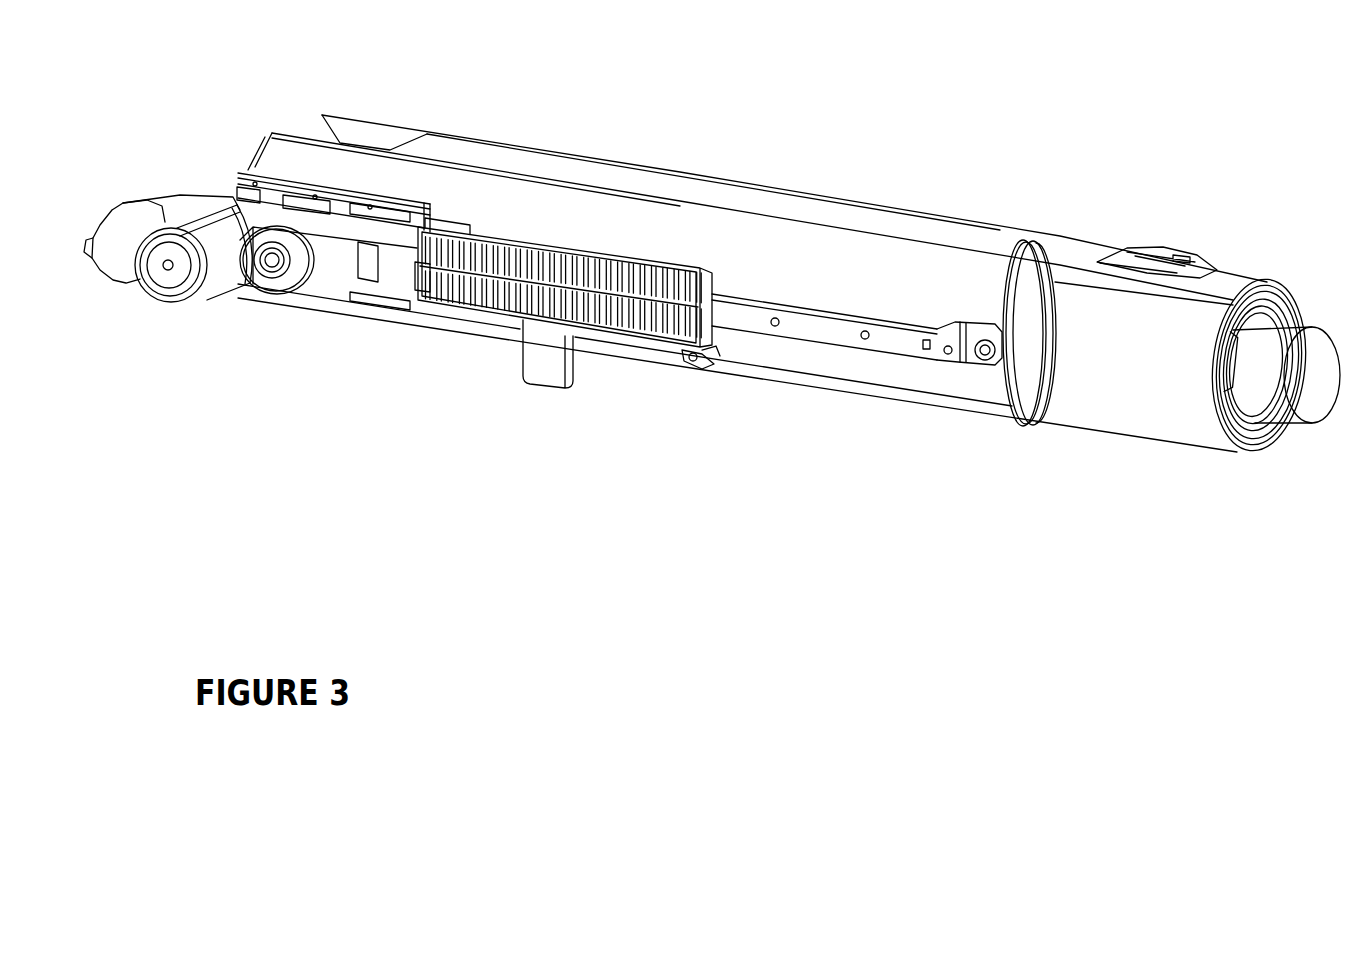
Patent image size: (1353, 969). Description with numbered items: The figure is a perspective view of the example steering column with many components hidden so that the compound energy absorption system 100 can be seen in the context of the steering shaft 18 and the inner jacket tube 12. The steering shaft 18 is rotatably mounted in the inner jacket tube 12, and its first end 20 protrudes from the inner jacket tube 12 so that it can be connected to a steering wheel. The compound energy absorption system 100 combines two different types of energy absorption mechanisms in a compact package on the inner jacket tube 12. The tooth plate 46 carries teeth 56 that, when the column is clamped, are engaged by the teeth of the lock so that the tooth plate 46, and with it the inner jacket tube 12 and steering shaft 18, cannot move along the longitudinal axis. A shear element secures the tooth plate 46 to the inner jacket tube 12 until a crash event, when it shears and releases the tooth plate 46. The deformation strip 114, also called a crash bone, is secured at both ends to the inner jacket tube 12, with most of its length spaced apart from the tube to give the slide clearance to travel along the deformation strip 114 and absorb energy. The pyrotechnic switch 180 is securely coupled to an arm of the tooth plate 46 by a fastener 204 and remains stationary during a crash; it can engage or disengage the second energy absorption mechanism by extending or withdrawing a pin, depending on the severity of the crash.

The inner jacket tube 12 is at (867, 202).
The steering shaft 18 is at (1248, 341).
The first end 20 is at (1310, 425).
The tooth plate 46 is at (713, 271).
The teeth 56 is at (613, 333).
The compound energy absorption system 100 is at (410, 446).
The deformation strip 114 is at (813, 345).
The pyrotechnic switch 180 is at (211, 298).
The fastener 204 is at (279, 276).